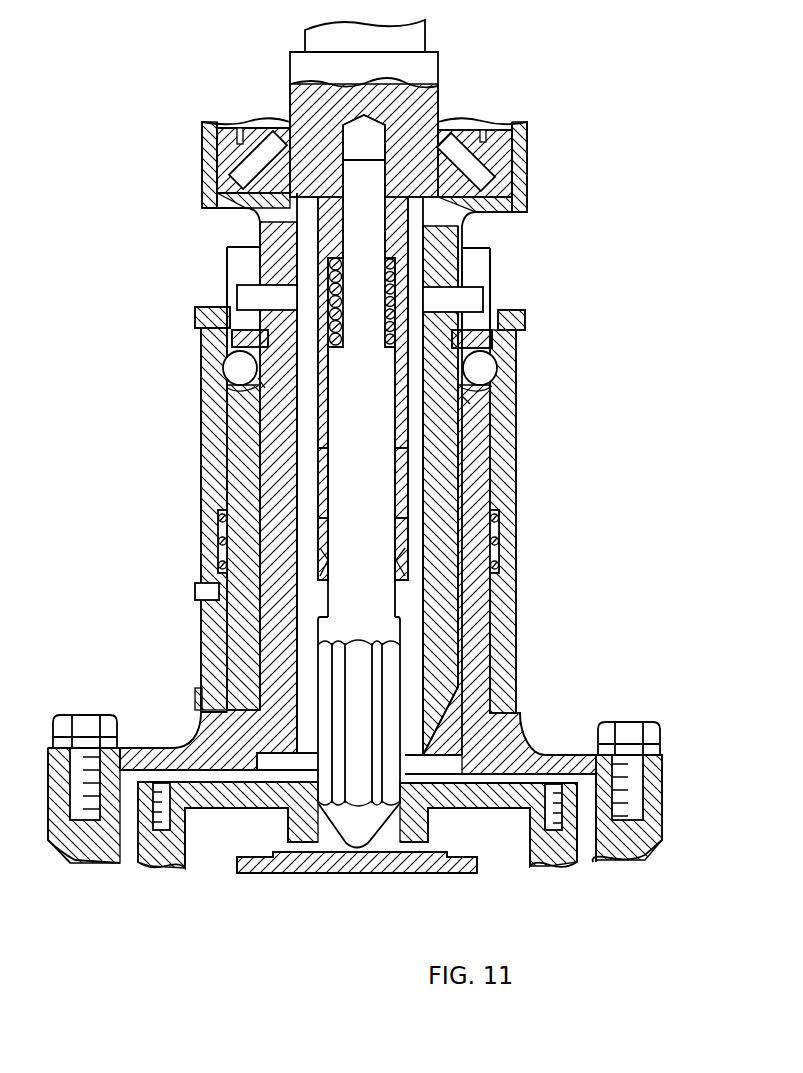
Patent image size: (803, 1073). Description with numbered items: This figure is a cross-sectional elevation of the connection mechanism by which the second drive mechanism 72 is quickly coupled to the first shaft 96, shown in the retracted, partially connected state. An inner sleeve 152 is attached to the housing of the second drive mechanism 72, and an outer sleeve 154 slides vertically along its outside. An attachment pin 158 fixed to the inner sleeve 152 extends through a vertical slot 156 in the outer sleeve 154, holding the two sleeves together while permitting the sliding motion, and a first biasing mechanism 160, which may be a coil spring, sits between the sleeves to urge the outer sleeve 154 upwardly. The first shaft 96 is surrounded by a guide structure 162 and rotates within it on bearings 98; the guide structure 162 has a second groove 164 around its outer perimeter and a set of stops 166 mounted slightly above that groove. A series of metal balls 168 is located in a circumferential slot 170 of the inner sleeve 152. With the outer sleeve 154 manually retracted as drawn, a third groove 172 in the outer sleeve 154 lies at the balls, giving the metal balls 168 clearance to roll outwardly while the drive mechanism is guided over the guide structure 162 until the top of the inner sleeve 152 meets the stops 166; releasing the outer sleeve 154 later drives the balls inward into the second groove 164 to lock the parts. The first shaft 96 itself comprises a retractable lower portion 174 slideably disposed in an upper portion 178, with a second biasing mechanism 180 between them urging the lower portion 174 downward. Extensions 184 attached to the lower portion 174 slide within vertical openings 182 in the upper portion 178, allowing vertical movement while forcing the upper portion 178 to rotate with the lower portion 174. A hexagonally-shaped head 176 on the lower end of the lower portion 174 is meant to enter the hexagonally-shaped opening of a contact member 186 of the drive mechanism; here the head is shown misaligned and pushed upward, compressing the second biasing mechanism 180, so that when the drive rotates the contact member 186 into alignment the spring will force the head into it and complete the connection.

The second drive mechanism 72 is at (672, 818).
The first shaft 96 is at (438, 97).
The bearings 98 is at (247, 155).
The inner sleeve 152 is at (235, 340).
The outer sleeve 154 is at (208, 432).
The vertical slot 156 is at (210, 652).
The attachment pin 158 is at (196, 595).
The first biasing mechanism 160 is at (220, 546).
The guide structure 162 is at (262, 248).
The second groove 164 is at (235, 377).
The stops 166 is at (247, 296).
The metal balls 168 is at (223, 389).
The circumferential slot 170 is at (262, 383).
The third groove 172 is at (216, 323).
The lower portion 174 is at (376, 503).
The hexagonally-shaped head 176 is at (358, 793).
The upper portion 178 is at (389, 227).
The second biasing mechanism 180 is at (392, 322).
The vertical openings 182 is at (397, 549).
The extensions 184 is at (399, 471).
The contact member 186 is at (428, 872).